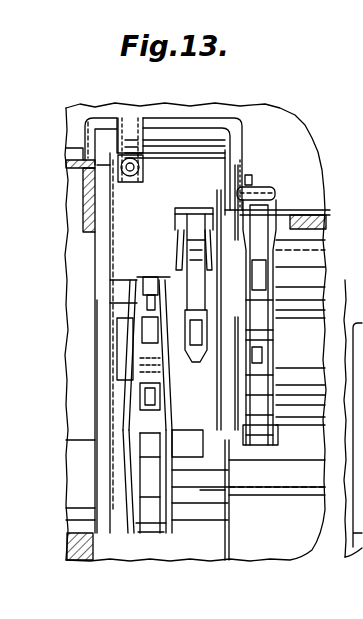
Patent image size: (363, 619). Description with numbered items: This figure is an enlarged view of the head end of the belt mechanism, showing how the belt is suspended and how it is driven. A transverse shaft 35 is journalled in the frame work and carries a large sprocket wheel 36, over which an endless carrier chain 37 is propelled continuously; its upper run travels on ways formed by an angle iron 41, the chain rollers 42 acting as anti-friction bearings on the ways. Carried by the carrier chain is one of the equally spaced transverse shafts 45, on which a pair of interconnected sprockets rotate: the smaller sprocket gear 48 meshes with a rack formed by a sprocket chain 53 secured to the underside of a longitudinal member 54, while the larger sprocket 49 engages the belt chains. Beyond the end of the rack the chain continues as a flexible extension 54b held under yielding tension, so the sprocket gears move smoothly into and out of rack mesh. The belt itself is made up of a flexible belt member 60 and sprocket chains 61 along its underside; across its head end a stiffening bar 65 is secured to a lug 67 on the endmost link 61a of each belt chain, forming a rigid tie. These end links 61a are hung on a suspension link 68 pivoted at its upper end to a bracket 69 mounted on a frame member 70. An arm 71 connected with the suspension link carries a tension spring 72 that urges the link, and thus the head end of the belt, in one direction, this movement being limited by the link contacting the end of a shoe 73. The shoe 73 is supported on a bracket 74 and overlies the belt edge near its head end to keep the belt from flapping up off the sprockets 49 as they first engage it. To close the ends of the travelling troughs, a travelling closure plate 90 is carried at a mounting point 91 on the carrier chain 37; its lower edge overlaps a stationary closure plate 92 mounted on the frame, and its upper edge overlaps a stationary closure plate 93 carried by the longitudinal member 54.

The transverse shaft 35 is at (283, 493).
The sprocket wheel 36 is at (160, 398).
The endless chain 37 is at (150, 388).
The angle iron 41 is at (125, 313).
The roller 42 is at (140, 370).
The shaft 45 is at (292, 318).
The sprocket gear 48 is at (191, 352).
The sprocket 49 is at (263, 355).
The sprocket chain 53 is at (178, 226).
The longitudinal member 54 is at (178, 210).
The chain extension 54b is at (182, 246).
The flexible belt member 60 is at (322, 214).
The sprocket chain 61 is at (279, 438).
The endmost link 61a is at (308, 258).
The stiffening bar 65 is at (305, 210).
The lug 67 is at (318, 232).
The suspension link 68 is at (230, 182).
The bracket 69 is at (100, 122).
The frame member 70 is at (88, 197).
The arm 71 is at (123, 186).
The tension spring 72 is at (140, 167).
The shoe 73 is at (262, 188).
The bracket 74 is at (245, 135).
The travelling closure plate 90 is at (230, 538).
The mounting point 91 is at (198, 518).
The stationary closure plate 92 is at (234, 408).
The stationary closure plate 93 is at (236, 196).